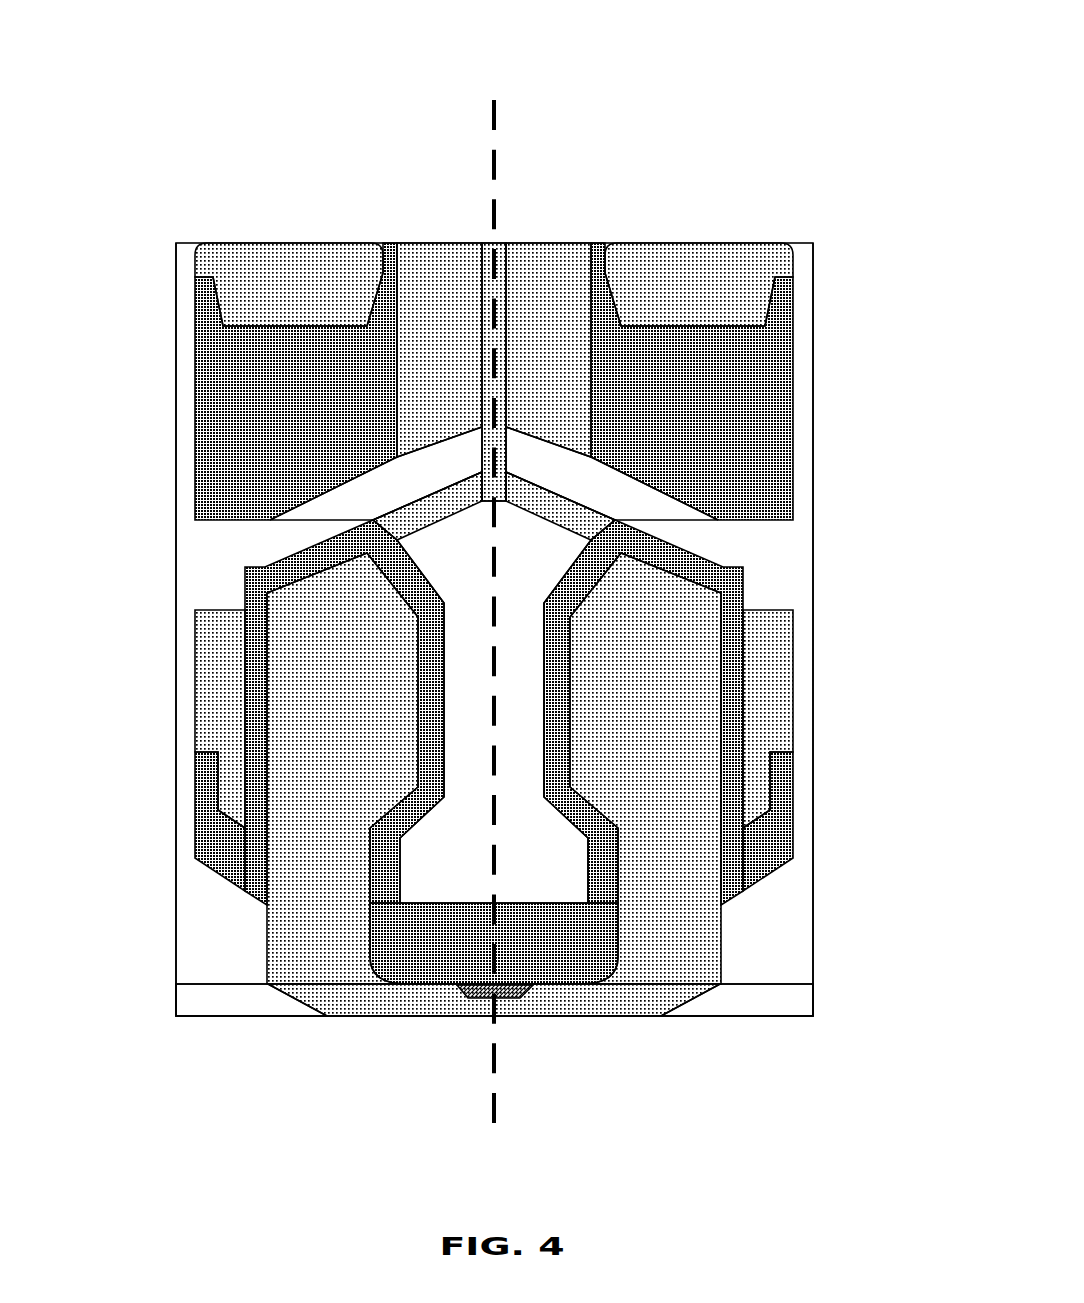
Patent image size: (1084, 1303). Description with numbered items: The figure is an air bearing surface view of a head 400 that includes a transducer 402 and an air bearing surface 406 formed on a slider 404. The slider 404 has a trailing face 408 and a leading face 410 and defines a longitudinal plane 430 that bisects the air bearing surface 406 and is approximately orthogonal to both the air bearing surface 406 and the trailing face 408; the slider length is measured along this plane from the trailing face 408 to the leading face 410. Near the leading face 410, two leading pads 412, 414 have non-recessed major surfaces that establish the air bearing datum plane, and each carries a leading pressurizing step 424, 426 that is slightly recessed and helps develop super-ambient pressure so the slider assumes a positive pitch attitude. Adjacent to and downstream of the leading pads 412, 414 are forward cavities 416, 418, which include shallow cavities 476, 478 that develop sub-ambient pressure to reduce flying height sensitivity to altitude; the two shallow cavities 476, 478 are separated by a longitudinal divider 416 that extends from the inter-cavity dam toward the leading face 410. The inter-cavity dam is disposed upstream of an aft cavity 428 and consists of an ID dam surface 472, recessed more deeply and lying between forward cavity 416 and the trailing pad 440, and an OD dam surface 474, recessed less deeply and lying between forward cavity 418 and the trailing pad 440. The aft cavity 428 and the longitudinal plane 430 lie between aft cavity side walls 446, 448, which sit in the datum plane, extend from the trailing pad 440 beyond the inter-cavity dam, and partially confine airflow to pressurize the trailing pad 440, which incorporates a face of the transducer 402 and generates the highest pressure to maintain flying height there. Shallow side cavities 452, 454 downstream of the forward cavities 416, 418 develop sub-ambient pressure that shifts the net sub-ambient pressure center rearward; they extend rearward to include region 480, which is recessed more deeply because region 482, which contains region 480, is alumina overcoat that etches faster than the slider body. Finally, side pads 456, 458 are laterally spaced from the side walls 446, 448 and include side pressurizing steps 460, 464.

The head 400 is at (775, 170).
The transducer 402 is at (497, 987).
The slider 404 is at (175, 588).
The air bearing surface 406 is at (802, 352).
The trailing face 408 is at (235, 1017).
The leading face 410 is at (296, 345).
The leading pad 412 is at (281, 417).
The leading pad 414 is at (666, 417).
The forward cavity 416 is at (503, 337).
The forward cavity 418 is at (638, 530).
The leading pressurizing step 424 is at (261, 299).
The leading pressurizing step 426 is at (666, 299).
The aft cavity 428 is at (435, 575).
The longitudinal plane 430 is at (497, 620).
The trailing pad 440 is at (435, 963).
The aft cavity side wall 446 is at (433, 718).
The aft cavity side wall 448 is at (557, 742).
The shallow side cavity 452 is at (318, 676).
The shallow side cavity 454 is at (622, 676).
The side pad 456 is at (213, 863).
The side pad 458 is at (735, 863).
The side pressurizing step 460 is at (218, 642).
The side pressurizing step 464 is at (773, 667).
The ID dam surface 472 is at (420, 512).
The OD dam surface 474 is at (567, 512).
The shallow cavity 476 is at (450, 253).
The shallow cavity 478 is at (580, 275).
The region 480 is at (323, 995).
The region 482 is at (193, 993).